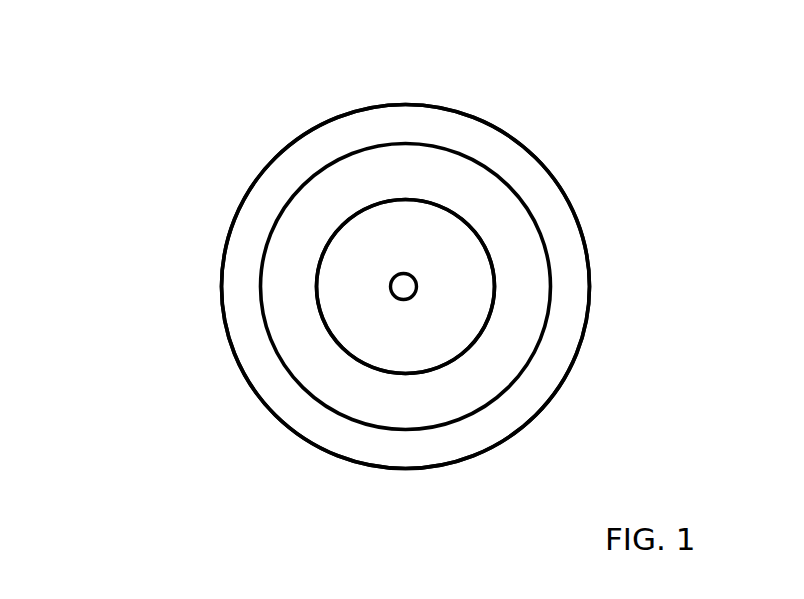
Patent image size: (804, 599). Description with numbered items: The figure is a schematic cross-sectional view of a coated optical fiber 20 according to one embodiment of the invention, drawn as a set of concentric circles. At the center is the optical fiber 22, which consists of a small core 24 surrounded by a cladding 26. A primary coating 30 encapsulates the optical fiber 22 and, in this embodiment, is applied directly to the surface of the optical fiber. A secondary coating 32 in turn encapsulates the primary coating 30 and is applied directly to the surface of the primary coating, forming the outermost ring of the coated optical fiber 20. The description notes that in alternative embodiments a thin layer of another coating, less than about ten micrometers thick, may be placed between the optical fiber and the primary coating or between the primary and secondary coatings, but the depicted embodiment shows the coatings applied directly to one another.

The coated optical fiber 20 is at (133, 85).
The optical fiber 22 is at (322, 246).
The core 24 is at (403, 287).
The cladding 26 is at (438, 242).
The primary coating 30 is at (280, 272).
The secondary coating 32 is at (242, 335).